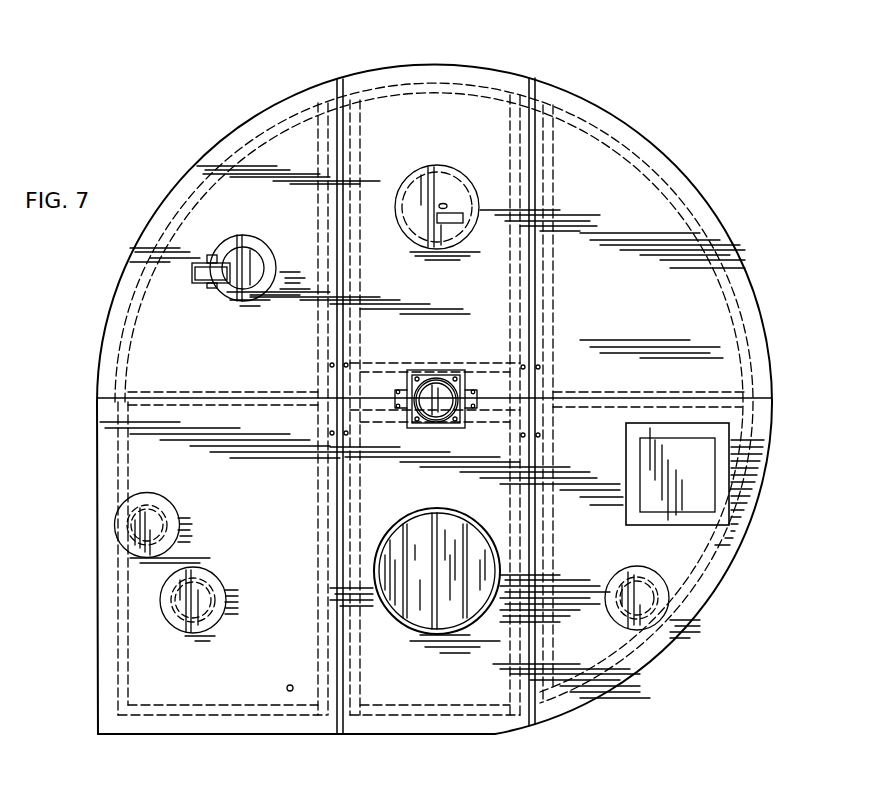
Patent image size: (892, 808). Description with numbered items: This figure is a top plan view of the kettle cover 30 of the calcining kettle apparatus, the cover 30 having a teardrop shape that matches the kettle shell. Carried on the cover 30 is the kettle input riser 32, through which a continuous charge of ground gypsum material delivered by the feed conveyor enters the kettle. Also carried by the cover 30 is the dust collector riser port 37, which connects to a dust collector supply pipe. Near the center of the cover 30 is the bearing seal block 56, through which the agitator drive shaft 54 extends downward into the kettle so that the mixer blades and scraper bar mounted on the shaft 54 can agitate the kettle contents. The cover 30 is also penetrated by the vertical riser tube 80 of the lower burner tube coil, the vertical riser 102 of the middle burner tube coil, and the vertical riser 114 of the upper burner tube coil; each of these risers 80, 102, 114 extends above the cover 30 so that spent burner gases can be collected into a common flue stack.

The kettle cover 30 is at (463, 688).
The kettle input riser 32 is at (720, 437).
The dust collector riser port 37 is at (463, 174).
The drive shaft 54 is at (440, 378).
The bearing seal block 56 is at (462, 384).
The vertical riser tube 80 is at (137, 530).
The vertical riser 102 is at (190, 598).
The vertical riser 114 is at (643, 600).